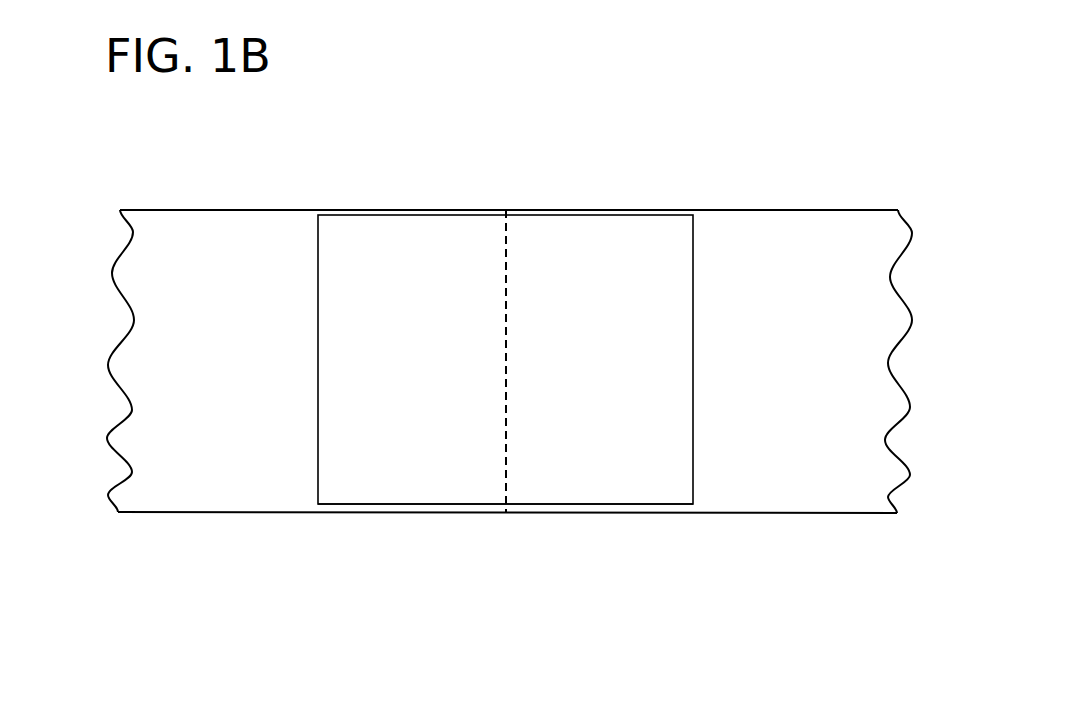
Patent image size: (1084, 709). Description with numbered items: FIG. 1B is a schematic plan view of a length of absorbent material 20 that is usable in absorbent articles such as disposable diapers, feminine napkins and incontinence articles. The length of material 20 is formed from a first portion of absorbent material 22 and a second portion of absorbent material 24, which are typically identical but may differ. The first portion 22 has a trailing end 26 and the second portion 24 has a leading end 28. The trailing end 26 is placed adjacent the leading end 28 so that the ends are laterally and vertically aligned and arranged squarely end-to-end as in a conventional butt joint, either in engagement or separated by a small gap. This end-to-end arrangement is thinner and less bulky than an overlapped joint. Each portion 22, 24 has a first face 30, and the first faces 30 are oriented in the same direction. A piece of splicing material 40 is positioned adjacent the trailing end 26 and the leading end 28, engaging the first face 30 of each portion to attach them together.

The length of material 20 is at (538, 168).
The first portion of absorbent material 22 is at (200, 207).
The second portion of absorbent material 24 is at (820, 210).
The trailing end 26 is at (432, 513).
The leading end 28 is at (592, 513).
The first face 30 is at (235, 485).
The piece of splicing material 40 is at (318, 253).